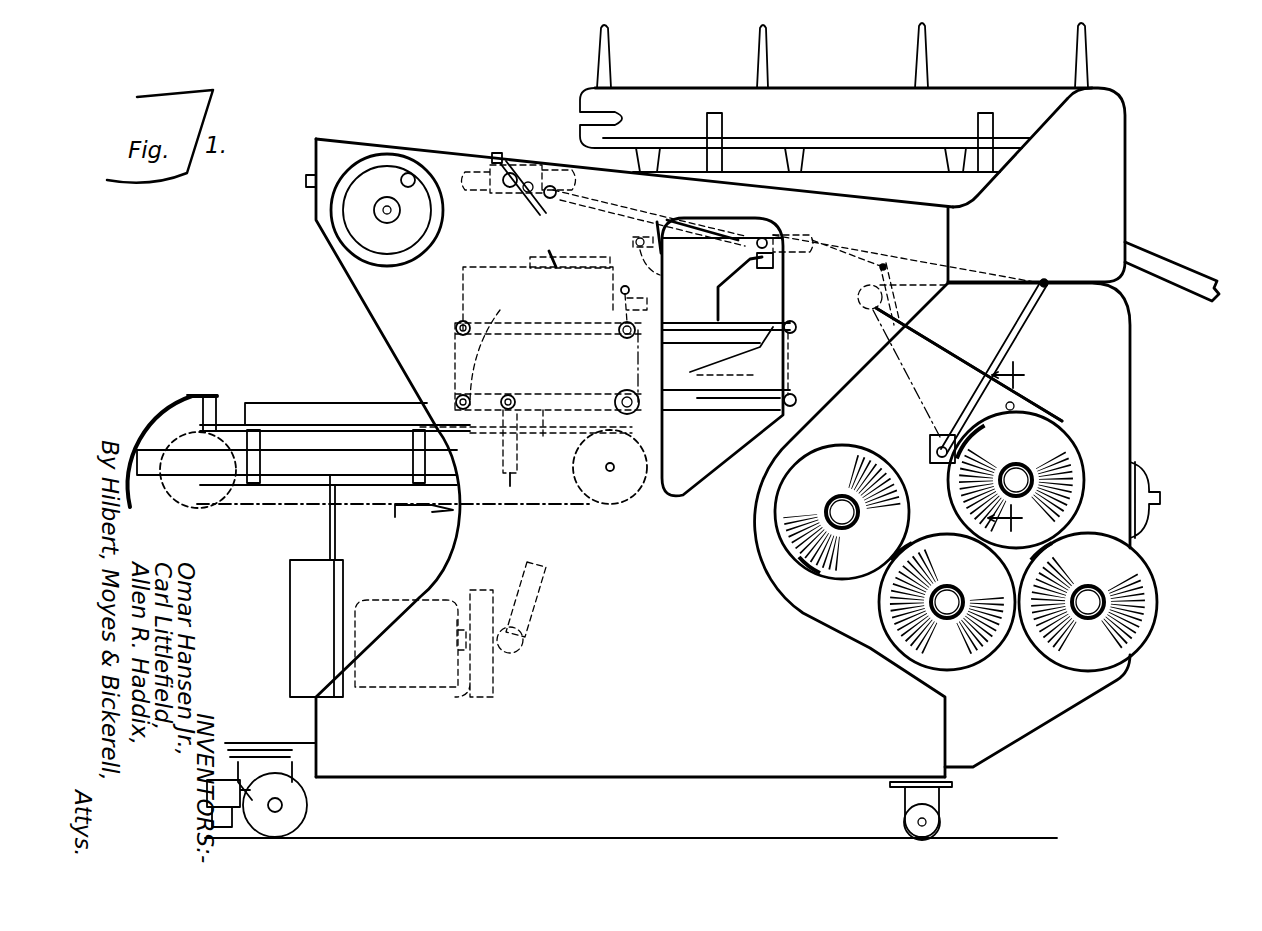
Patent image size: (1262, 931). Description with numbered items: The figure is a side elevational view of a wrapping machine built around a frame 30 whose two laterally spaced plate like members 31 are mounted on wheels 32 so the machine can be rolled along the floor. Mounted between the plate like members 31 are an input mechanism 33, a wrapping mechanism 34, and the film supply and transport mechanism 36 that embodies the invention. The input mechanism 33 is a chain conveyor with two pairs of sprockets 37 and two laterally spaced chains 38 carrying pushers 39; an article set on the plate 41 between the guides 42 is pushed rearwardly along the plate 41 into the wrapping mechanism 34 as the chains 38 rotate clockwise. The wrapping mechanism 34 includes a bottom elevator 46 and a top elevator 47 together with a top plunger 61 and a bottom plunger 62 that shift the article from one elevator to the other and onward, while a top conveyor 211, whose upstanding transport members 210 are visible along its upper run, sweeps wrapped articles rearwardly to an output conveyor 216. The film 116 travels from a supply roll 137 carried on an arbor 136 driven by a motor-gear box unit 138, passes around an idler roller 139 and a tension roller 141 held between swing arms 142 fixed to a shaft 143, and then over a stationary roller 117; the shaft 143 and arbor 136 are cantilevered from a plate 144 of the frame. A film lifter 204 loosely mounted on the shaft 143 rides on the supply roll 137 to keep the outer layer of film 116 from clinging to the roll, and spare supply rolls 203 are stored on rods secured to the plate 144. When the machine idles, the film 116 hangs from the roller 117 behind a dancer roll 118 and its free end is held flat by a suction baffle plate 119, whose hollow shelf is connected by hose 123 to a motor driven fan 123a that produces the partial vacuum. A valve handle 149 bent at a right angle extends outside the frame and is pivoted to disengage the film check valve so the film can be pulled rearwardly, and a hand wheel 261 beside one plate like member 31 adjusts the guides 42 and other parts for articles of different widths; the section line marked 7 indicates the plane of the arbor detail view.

The section line 7- 7 is at (1018, 447).
The frame 30 is at (533, 788).
The plate like members 31 is at (760, 768).
The wheels 32 is at (301, 809).
The input mechanism 33 is at (229, 377).
The wrapping mechanism 34 is at (421, 332).
The film supply and transport mechanism 36 is at (1105, 430).
The sprockets 37 is at (218, 500).
The chains 38 is at (553, 506).
The pushers 39 is at (238, 405).
The plate 41 is at (520, 440).
The guides 42 is at (358, 407).
The bottom elevator 46 is at (697, 405).
The top elevator 47 is at (462, 289).
The top plunger 61 is at (527, 205).
The bottom plunger 62 is at (737, 270).
The film 116 is at (937, 357).
The stationary roller 117 is at (662, 266).
The dancer roll 118 is at (621, 292).
The suction baffle plate 119 is at (585, 363).
The hose 123 is at (540, 598).
The motor driven fan 123a is at (497, 698).
The arbor 136 is at (1003, 493).
The supply roll 137 is at (1058, 431).
The motor-gear box unit 138 is at (1156, 533).
The idler roller 139 is at (868, 310).
The tension roller 141 is at (1045, 281).
The swing arms 142 is at (1022, 334).
The shaft 143 is at (930, 450).
The plate 144 is at (1130, 333).
The valve handle 149 is at (652, 229).
The spare supply rolls 203 is at (805, 555).
The film lifter 204 is at (977, 420).
The prongs 210 is at (755, 45).
The top conveyor 211 is at (553, 114).
The output conveyor 216 is at (1203, 263).
The hand wheel 261 is at (328, 249).